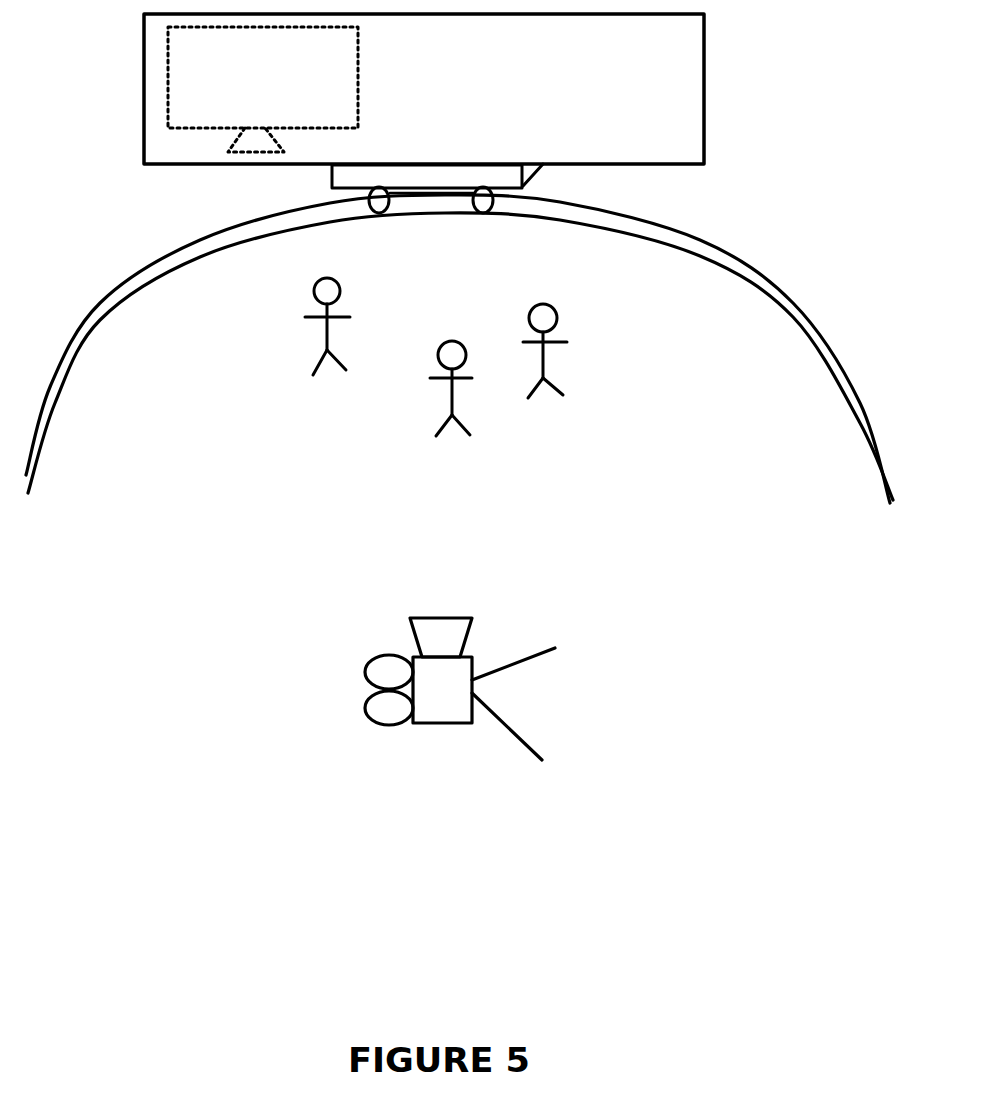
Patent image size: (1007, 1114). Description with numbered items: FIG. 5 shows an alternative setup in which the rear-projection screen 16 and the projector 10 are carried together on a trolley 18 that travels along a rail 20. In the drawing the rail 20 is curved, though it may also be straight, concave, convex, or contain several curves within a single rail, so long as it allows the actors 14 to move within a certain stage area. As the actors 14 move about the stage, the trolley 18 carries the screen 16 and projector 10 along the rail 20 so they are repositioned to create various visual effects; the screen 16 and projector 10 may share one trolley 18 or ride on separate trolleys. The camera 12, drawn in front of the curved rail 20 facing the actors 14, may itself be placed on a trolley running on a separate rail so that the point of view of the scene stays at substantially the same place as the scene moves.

The projector 10 is at (327, 95).
The camera 12 is at (515, 622).
The actors 14 is at (582, 363).
The rear-projection screen 16 is at (680, 78).
The trolley 18 is at (318, 182).
The rail 20 is at (716, 238).